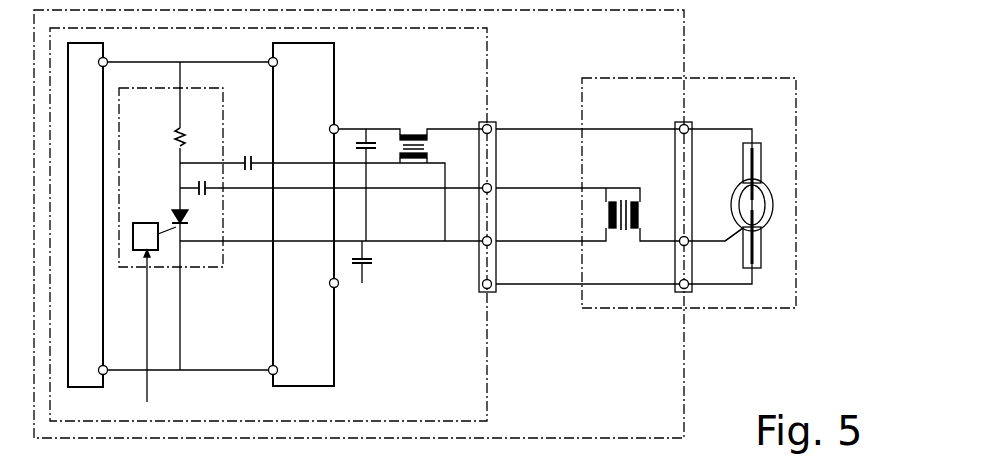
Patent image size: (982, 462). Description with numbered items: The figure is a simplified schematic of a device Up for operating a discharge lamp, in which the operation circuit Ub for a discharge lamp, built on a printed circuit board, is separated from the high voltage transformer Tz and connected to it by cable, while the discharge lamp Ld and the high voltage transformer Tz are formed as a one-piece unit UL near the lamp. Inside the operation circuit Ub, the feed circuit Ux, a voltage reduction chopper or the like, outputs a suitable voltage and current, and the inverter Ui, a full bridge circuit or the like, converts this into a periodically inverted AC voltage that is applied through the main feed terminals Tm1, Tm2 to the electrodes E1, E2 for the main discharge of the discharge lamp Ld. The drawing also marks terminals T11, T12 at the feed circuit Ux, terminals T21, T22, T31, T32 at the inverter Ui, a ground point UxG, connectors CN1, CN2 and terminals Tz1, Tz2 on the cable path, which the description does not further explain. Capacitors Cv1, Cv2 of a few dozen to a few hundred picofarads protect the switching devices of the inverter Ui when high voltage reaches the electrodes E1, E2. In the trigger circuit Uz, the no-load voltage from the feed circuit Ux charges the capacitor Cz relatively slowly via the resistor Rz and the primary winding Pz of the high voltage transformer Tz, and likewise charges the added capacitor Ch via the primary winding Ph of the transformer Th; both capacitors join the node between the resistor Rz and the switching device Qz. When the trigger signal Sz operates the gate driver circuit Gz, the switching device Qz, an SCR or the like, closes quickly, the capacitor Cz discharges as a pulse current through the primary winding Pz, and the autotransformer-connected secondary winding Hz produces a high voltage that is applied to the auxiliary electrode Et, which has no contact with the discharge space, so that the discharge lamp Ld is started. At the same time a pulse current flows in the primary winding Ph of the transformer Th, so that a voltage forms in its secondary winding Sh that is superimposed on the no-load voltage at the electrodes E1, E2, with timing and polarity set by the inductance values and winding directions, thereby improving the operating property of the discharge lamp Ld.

The device for operating a discharge lamp Up is at (685, 400).
The operation circuit for a discharge lamp Ub is at (488, 400).
The one-piece unit UL is at (775, 309).
The trigger circuit Uz is at (218, 268).
The feed circuit Ux is at (85, 215).
The terminal T11 is at (106, 58).
The terminal T12 is at (107, 373).
The inverter Ui is at (276, 387).
The terminal T21 is at (278, 62).
The terminal T22 is at (278, 370).
The terminal T31 is at (329, 129).
The terminal T32 is at (329, 283).
The resistor Rz is at (174, 132).
The capacitor Ch is at (248, 153).
The capacitor Cz is at (204, 196).
The switching device Qz is at (172, 208).
The gate driver circuit Gz is at (145, 236).
The trigger signal Sz is at (149, 392).
The ground of DC power source UxG is at (232, 370).
The capacitor Cv1 is at (372, 136).
The capacitor Cv2 is at (366, 266).
The transformer Th is at (432, 149).
The secondary winding Sh is at (415, 134).
The primary winding Ph is at (413, 160).
The high voltage transformer Tz is at (623, 232).
The primary winding Pz is at (606, 210).
The secondary winding Hz is at (640, 210).
The connector CN1 is at (490, 120).
The connector CN2 is at (674, 120).
The main feed terminal Tm1 is at (490, 132).
The terminal Tz1 is at (490, 185).
The terminal Tz2 is at (490, 238).
The main feed terminal Tm2 is at (490, 281).
The auxiliary electrode Et is at (748, 205).
The electrode for the main discharge E1 is at (760, 178).
The electrode for the main discharge E2 is at (760, 232).
The discharge lamp Ld is at (728, 246).